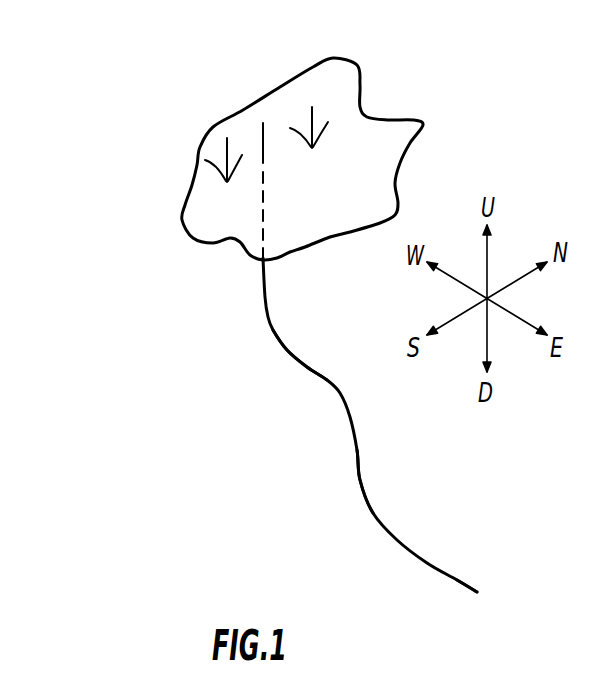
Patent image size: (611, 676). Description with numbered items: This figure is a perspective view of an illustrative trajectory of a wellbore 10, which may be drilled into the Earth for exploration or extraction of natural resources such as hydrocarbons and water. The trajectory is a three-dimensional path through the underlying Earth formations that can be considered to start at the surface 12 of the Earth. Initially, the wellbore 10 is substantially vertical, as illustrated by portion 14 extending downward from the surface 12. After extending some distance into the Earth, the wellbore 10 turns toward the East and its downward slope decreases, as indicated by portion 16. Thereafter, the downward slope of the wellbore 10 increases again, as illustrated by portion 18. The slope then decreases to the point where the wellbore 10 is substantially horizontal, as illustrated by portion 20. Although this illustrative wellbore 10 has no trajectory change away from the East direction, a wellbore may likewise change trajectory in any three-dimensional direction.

The wellbore 10 is at (273, 327).
The surface 12 is at (353, 200).
The portion 14 is at (256, 212).
The portion 16 is at (293, 375).
The portion 18 is at (355, 489).
The portion 20 is at (446, 589).